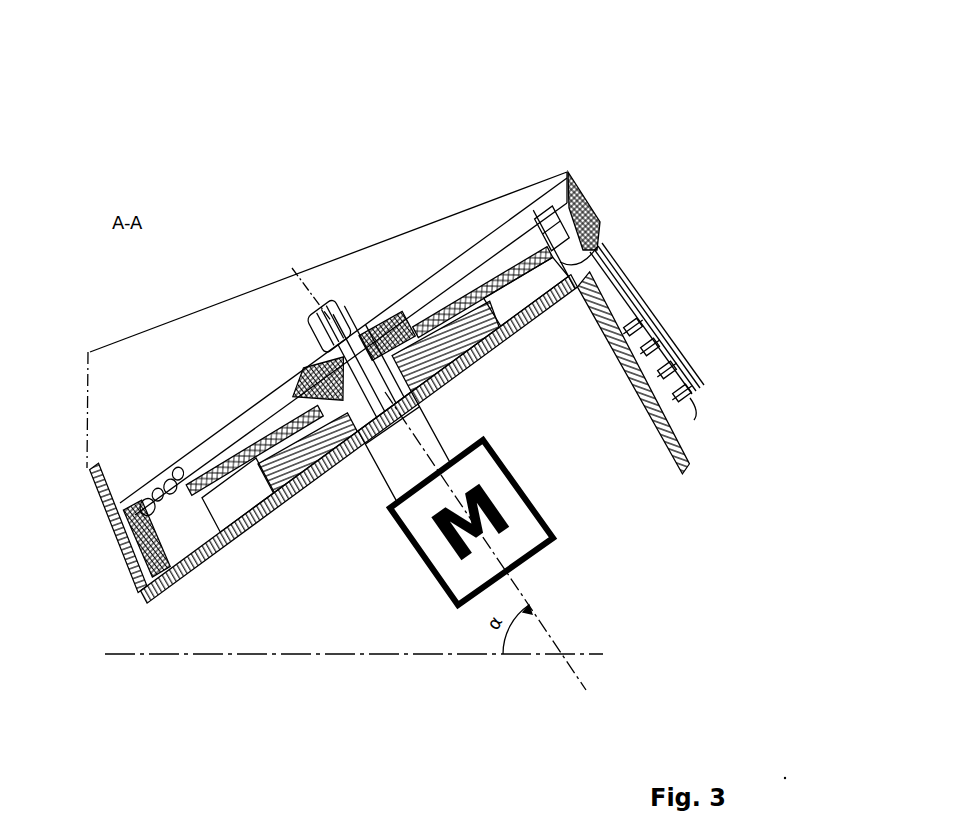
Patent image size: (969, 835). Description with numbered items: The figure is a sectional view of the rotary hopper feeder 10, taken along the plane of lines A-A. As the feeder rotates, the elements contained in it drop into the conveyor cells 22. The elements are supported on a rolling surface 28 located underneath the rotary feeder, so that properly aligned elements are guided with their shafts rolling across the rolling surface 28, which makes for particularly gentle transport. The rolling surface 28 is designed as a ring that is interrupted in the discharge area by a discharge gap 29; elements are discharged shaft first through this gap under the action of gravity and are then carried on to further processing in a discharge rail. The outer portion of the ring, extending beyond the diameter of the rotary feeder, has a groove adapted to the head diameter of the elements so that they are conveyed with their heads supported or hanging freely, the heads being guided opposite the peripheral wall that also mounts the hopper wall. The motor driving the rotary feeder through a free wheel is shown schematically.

The rotary hopper feeder 10 is at (578, 142).
The conveyor cells 22 is at (532, 160).
The rolling surface 28 is at (620, 247).
The discharge gap 29 is at (643, 287).